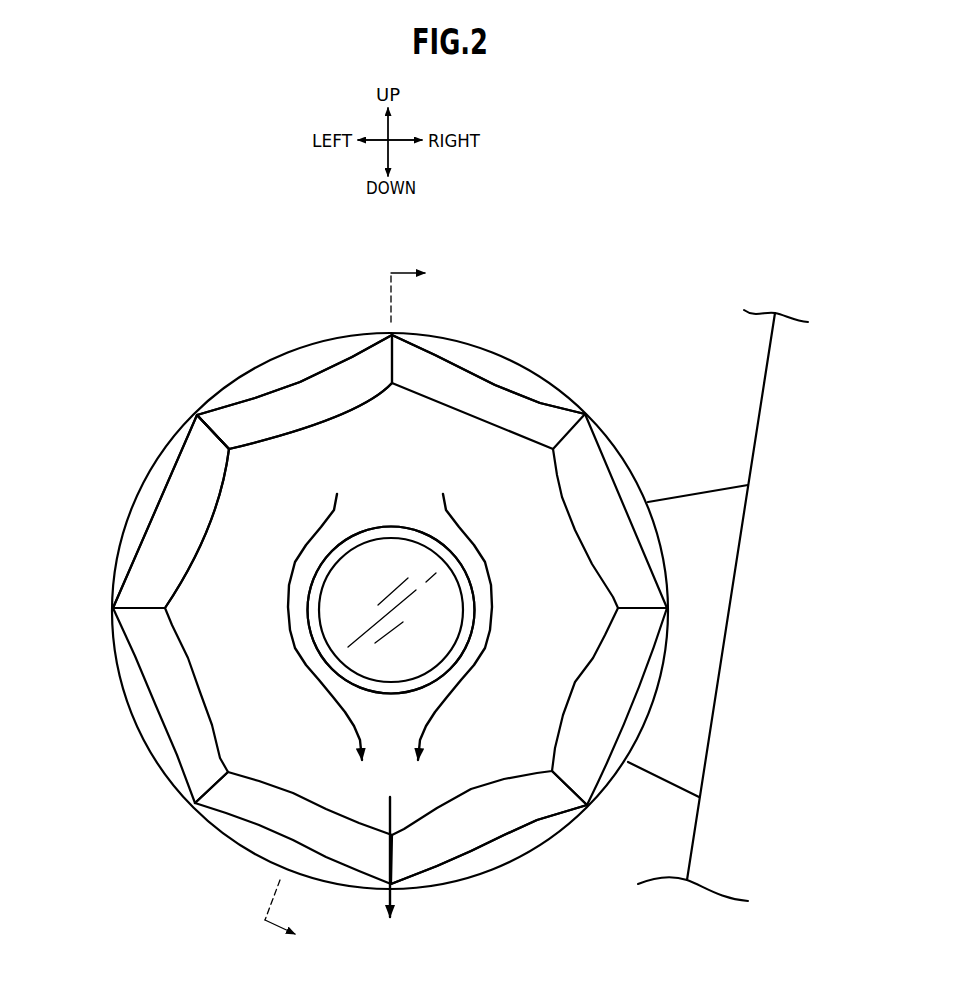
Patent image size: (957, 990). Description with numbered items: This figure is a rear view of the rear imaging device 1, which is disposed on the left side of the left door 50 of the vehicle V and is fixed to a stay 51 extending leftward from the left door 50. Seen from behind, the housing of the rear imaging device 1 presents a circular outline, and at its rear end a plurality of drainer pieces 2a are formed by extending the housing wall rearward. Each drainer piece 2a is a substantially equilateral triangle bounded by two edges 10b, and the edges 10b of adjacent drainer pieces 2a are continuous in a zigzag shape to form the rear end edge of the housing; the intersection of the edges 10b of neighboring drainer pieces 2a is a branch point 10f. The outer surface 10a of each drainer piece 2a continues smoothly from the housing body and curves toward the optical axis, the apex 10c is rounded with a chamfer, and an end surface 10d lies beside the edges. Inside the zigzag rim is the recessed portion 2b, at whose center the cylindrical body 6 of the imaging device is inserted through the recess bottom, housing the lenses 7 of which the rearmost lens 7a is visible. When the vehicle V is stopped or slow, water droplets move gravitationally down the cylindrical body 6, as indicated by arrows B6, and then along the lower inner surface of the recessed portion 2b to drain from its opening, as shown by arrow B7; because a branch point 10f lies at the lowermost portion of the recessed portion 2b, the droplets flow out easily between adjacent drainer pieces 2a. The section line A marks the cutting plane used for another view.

The rear imaging device 1 is at (516, 281).
The drainer piece 2a is at (149, 706).
The recessed portion 2b is at (258, 720).
The cylindrical body 6 is at (403, 514).
The lenses 7 is at (391, 495).
The rearmost lens 7a is at (379, 558).
The outer surface 10a is at (260, 372).
The edge 10b is at (340, 357).
The apex 10c is at (299, 378).
The end surface 10d is at (188, 517).
The branch point 10f is at (593, 808).
The left door 50 is at (777, 393).
The vehicle V is at (723, 605).
The stay 51 is at (697, 510).
The arrows B6 is at (390, 615).
The arrow B7 is at (387, 872).
The section line A is at (345, 602).